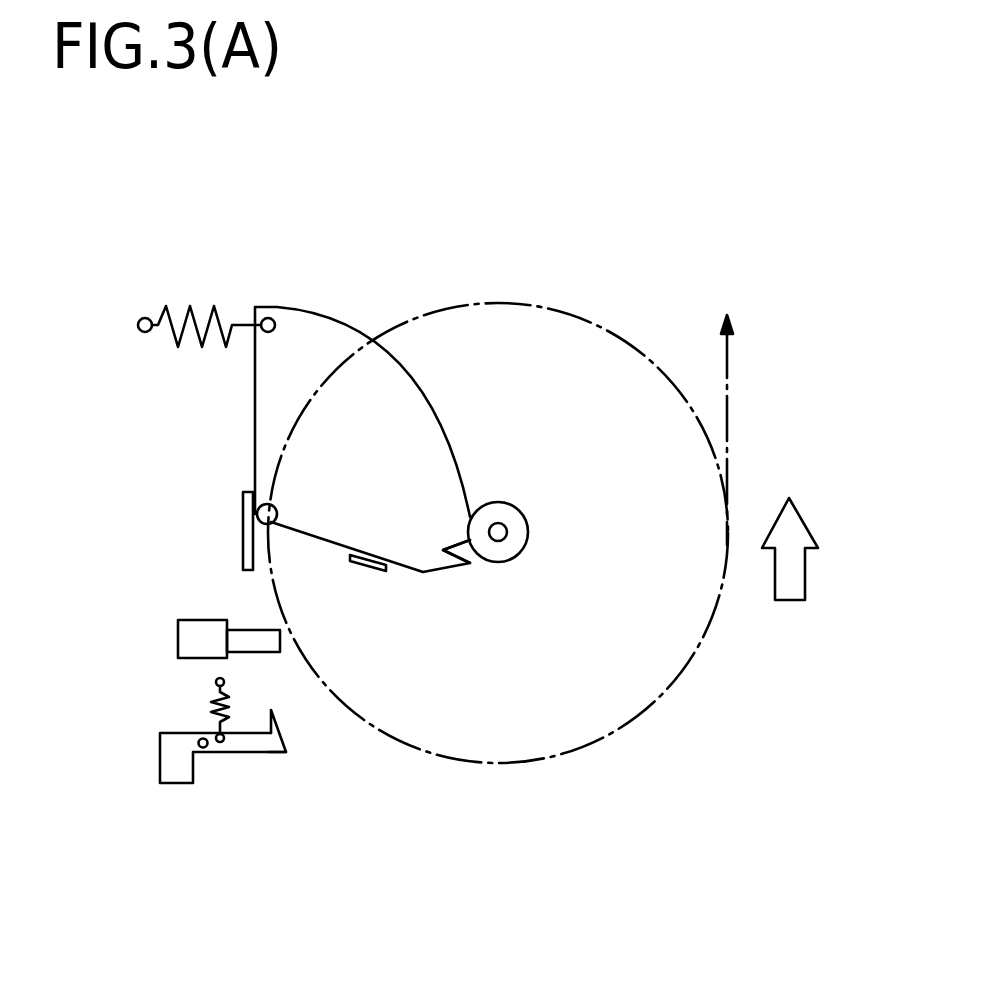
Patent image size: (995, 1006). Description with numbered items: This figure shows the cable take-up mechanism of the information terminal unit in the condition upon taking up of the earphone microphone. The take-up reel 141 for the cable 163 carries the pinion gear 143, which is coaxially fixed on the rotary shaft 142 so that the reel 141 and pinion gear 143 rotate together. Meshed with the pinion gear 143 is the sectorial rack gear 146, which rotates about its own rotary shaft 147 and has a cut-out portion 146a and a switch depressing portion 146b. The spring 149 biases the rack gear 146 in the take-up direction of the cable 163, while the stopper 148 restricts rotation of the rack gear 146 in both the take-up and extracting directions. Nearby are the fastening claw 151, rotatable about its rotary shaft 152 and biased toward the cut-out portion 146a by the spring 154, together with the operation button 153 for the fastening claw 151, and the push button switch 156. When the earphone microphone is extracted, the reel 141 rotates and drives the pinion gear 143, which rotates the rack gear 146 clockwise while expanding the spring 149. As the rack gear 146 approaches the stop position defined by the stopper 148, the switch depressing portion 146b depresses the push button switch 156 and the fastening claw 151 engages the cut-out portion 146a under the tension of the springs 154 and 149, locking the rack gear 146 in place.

The reel 141 is at (698, 650).
The rotary shaft of the reel 142 is at (507, 527).
The pinion gear 143 is at (493, 502).
The rack gear 146 is at (338, 313).
The cut-out portion 146a is at (467, 568).
The switch depressing portion 146b is at (375, 571).
The rotary shaft of the rack gear 147 is at (267, 504).
The stopper 148 is at (243, 543).
The spring for the rack gear 149 is at (188, 305).
The fastening claw 151 is at (270, 755).
The rotary shaft of the fastening claw 152 is at (207, 752).
The operation button for the fastening claw 153 is at (170, 760).
The spring for the fastening claw 154 is at (207, 707).
The push button switch 156 is at (200, 637).
The cable 163 is at (728, 428).